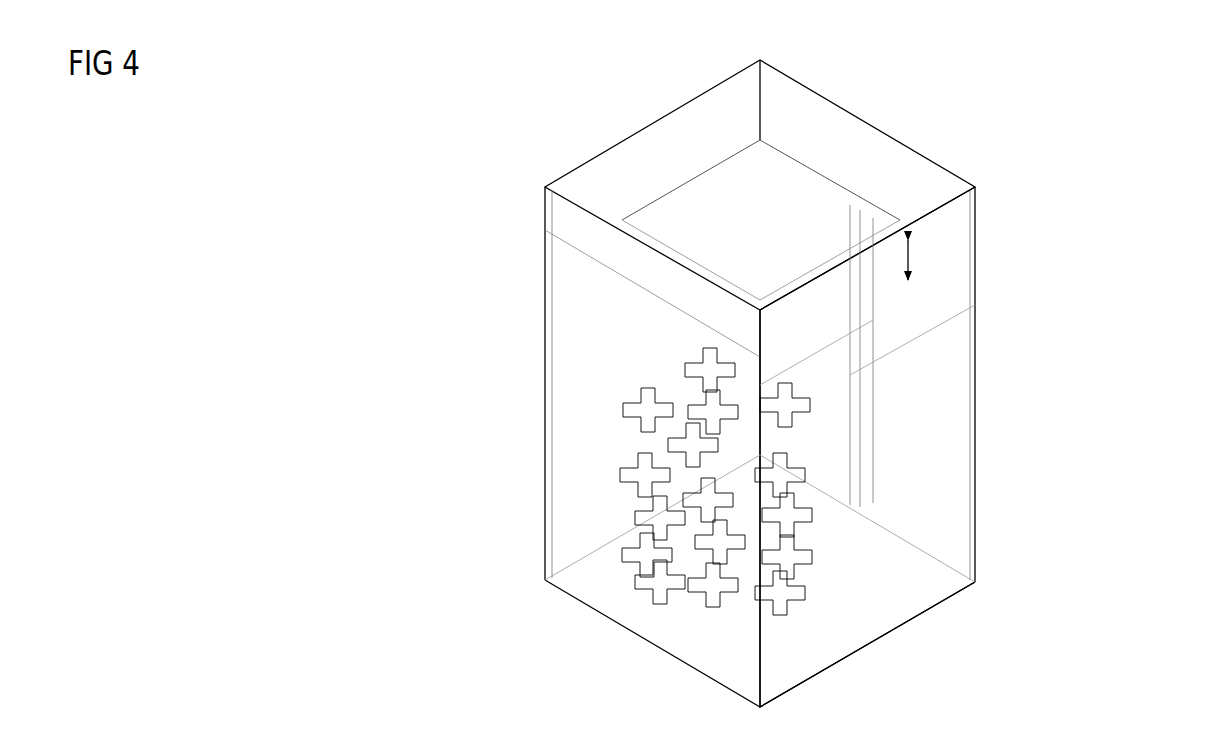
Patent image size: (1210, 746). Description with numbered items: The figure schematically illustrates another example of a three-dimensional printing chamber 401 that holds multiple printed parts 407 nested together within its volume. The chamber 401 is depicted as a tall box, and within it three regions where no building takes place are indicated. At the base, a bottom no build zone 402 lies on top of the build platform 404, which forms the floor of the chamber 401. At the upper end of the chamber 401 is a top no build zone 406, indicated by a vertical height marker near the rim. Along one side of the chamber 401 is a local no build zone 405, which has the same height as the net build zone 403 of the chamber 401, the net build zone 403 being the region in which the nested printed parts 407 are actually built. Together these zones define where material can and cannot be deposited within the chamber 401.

The 3D printing chamber 401 is at (980, 502).
The bottom no build zone 402 is at (935, 592).
The net build zone 403 is at (913, 452).
The build platform 404 is at (640, 638).
The local no build zone 405 is at (867, 212).
The top no build zone 406 is at (918, 258).
The printed parts 407 is at (623, 554).